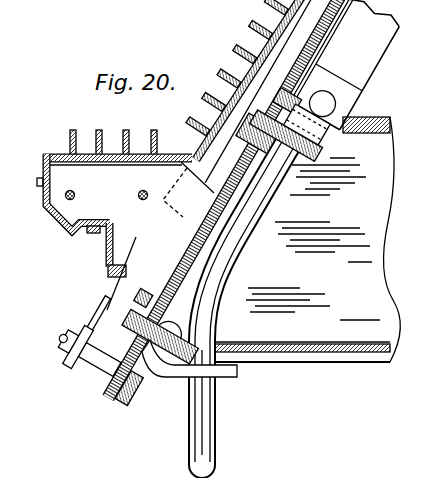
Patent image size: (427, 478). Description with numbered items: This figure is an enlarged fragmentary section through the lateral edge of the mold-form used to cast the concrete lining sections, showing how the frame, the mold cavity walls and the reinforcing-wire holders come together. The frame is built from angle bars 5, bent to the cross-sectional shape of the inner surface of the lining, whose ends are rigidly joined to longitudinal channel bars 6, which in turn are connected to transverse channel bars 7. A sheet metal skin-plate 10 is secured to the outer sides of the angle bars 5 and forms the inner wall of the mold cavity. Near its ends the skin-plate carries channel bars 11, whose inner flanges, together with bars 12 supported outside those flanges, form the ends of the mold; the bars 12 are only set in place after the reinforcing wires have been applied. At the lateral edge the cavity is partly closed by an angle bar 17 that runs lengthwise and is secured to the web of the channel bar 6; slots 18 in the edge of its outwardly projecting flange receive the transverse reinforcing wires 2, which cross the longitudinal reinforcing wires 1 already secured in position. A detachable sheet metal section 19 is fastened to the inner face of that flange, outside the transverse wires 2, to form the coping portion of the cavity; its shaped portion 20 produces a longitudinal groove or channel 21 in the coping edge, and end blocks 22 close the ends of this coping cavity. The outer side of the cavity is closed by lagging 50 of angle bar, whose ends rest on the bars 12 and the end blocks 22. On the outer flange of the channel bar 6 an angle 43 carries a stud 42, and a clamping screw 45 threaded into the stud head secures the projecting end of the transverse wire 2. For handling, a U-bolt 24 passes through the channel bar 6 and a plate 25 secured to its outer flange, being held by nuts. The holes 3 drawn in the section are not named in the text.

The longitudinal reinforcing wires 1 is at (300, 100).
The transverse reinforcing wires 2 is at (98, 314).
The holes 3 is at (138, 194).
The angle bars 5 is at (376, 53).
The channel bars 6 is at (212, 232).
The transverse channel bars 7 is at (344, 335).
The skin-plate 10 is at (188, 245).
The channel bars 11 is at (315, 28).
The bars 12 is at (236, 60).
The angle bars 17 is at (162, 282).
The slots 18 is at (128, 265).
The sheet metal sections 19 is at (50, 229).
The portions 20 is at (107, 252).
The longitudinal grooves or channels 21 is at (92, 236).
The end blocks 22 is at (56, 153).
The U-bolts 24 is at (212, 434).
The plates 25 is at (225, 378).
The studs 42 is at (69, 351).
The angles 43 is at (97, 389).
The clamping screws 45 is at (58, 338).
The lagging 50 is at (153, 130).